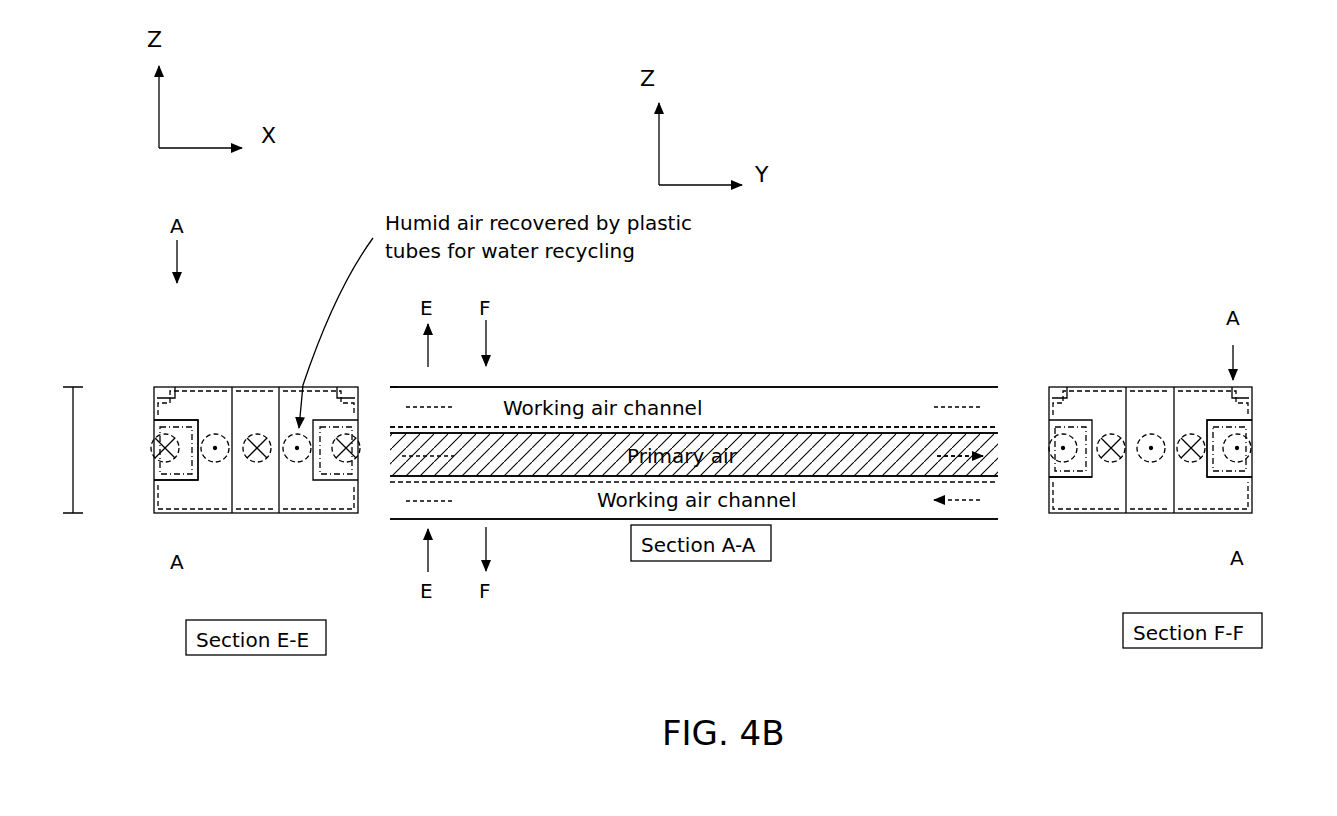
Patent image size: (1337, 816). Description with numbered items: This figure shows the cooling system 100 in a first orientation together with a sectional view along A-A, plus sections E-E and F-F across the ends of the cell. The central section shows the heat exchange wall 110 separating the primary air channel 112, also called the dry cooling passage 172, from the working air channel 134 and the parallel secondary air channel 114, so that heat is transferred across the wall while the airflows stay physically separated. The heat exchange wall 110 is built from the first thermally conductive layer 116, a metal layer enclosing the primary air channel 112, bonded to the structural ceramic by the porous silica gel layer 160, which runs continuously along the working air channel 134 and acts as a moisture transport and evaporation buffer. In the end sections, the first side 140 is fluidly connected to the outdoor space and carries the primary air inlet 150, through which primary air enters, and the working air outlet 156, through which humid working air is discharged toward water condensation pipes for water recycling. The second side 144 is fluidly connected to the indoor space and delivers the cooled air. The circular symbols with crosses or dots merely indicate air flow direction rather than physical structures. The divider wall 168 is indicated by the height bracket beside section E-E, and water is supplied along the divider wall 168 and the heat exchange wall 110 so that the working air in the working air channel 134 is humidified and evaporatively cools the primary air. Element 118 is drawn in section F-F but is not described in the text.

The cooling system 100 is at (1148, 240).
The heat exchange wall 110 is at (815, 432).
The primary air channel 112 is at (213, 434).
The secondary air channel 114 is at (258, 434).
The first thermally conductive layer 116 is at (987, 452).
The channel 118 is at (1075, 478).
The working air channel 134 is at (477, 406).
The first side 140 is at (170, 410).
The second side 144 is at (1240, 409).
The primary air inlet 150 is at (217, 455).
The working air outlet 156 is at (413, 350).
The silica gel layer 160 is at (859, 428).
The divider wall 168 is at (73, 483).
The dry cooling passage 172 is at (758, 454).